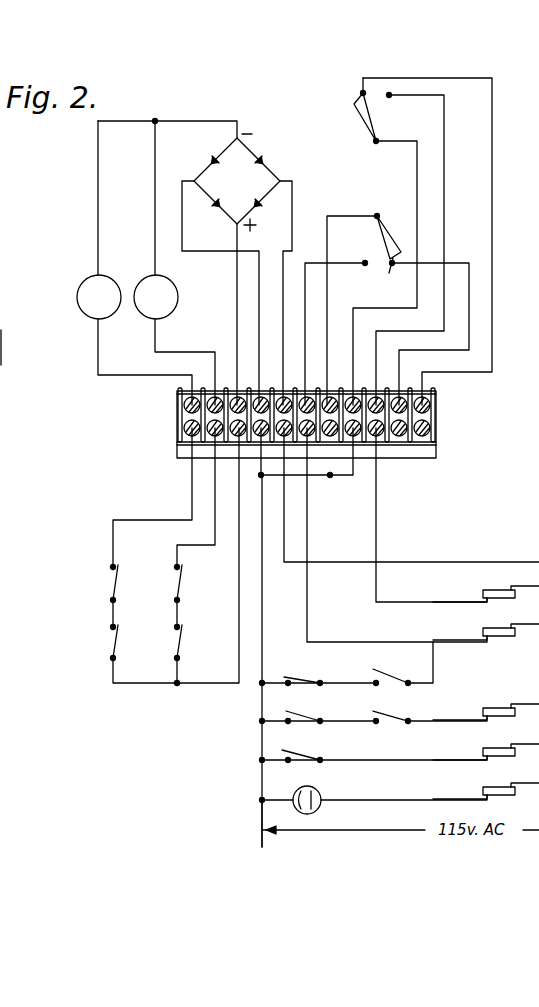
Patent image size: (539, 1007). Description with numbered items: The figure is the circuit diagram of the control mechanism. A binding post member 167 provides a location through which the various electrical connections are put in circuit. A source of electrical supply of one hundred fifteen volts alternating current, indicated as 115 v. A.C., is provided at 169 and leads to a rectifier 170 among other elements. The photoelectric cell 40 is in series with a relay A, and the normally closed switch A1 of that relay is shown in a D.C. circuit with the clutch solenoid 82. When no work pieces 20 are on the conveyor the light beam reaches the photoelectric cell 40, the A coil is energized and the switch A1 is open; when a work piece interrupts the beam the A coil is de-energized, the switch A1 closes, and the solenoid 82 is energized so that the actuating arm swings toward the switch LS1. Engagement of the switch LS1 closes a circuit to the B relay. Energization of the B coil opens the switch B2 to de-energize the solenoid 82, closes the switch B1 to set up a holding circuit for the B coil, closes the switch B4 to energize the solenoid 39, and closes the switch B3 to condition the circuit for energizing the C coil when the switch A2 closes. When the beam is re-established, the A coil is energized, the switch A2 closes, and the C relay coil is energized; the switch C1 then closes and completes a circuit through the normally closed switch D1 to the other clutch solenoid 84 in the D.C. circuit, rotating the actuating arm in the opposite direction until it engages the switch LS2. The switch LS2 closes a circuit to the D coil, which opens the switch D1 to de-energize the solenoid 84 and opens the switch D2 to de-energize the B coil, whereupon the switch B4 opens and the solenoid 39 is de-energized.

The work pieces 20 is at (9, 335).
The solenoid 39 is at (495, 746).
The photoelectric cell 40 is at (328, 779).
The clutch solenoid 82 is at (104, 284).
The clutch solenoid 84 is at (146, 313).
The 115 v. A.C. supply 115 is at (296, 353).
The binding post member 167 is at (172, 429).
The source of electrical supply 169 is at (264, 792).
The rectifier 170 is at (291, 160).
The switch LS1 is at (400, 222).
The switch LS2 is at (353, 111).
The switch A1 is at (108, 581).
The switch B2 is at (111, 645).
The switch C1 is at (188, 566).
The switch D1 is at (181, 650).
The switch D2 is at (304, 679).
The switch B1 is at (408, 681).
The switch A2 is at (337, 708).
The switch B3 is at (420, 708).
The switch B4 is at (346, 750).
The D coil D is at (480, 587).
The B relay B is at (485, 628).
The C relay coil C is at (485, 706).
The relay A is at (485, 785).